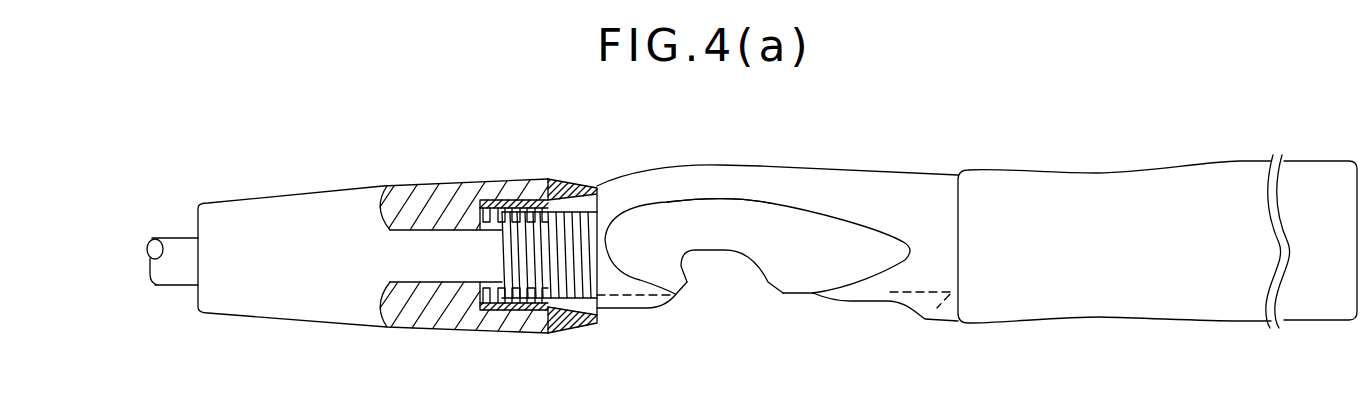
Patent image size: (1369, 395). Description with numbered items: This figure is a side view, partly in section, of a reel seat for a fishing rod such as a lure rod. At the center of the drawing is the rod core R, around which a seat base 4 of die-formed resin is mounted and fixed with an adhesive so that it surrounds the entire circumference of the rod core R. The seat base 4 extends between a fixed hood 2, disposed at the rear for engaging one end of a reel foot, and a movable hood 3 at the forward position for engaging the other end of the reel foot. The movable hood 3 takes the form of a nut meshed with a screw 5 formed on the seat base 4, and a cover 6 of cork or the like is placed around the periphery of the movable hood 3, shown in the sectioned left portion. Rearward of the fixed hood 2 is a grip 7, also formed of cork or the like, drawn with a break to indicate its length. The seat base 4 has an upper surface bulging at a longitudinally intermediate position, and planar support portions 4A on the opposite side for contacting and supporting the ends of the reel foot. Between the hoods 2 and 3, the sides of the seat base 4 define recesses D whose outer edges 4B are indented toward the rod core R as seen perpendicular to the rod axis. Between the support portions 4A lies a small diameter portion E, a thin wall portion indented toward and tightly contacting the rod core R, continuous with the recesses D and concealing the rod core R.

The rod core R is at (183, 238).
The cover 6 is at (398, 190).
The screw 5 is at (558, 238).
The movable hood 3 is at (575, 325).
The seat base 4 is at (930, 172).
The planar support portions 4A is at (648, 295).
The outer edges 4B is at (773, 196).
The recesses D is at (808, 230).
The small diameter portion E is at (744, 297).
The fixed hood 2 is at (945, 318).
The grip 7 is at (1140, 172).